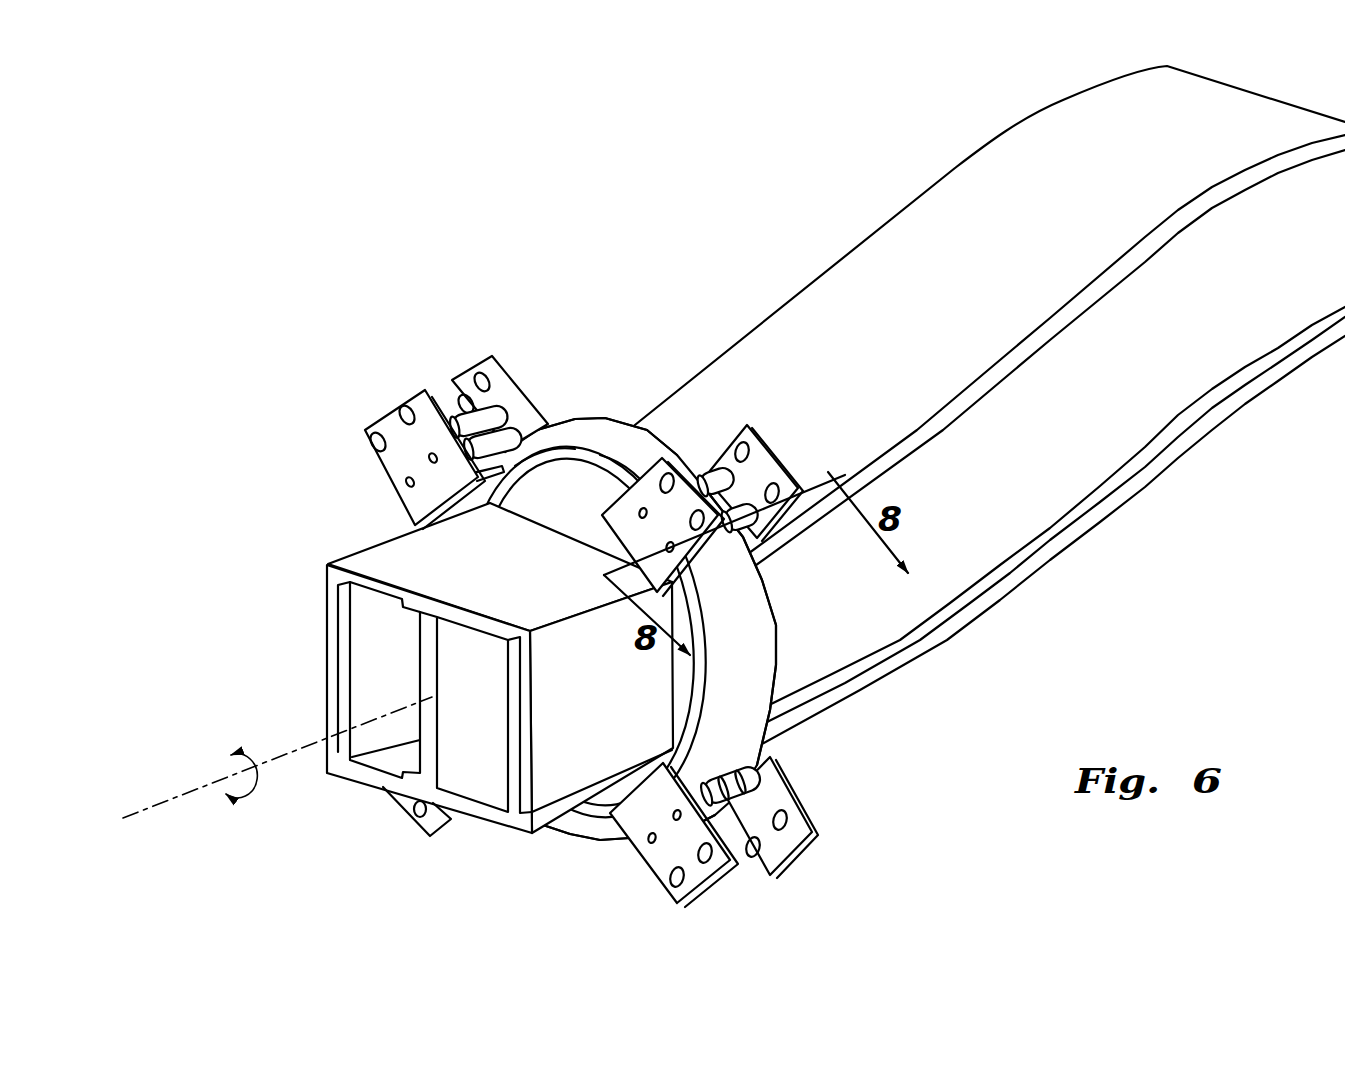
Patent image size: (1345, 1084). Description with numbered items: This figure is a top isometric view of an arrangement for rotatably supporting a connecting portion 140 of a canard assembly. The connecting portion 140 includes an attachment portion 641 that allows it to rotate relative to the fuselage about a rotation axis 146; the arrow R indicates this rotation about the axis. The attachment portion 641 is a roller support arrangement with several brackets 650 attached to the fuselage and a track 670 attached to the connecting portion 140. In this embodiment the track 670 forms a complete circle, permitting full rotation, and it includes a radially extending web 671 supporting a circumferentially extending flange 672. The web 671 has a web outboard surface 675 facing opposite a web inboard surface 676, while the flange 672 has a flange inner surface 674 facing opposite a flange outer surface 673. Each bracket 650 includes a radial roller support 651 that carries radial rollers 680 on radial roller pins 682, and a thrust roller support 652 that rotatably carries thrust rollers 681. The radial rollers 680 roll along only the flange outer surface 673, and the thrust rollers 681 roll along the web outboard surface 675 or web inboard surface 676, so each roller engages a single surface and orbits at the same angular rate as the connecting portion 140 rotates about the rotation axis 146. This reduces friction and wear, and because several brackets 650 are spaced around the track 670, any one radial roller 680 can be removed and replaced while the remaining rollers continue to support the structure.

The connecting portion 140 is at (853, 288).
The rotation axis 146 is at (148, 800).
The direction of rotation R is at (258, 786).
The attachment portion 641 is at (546, 383).
The bracket 650 is at (589, 630).
The radial roller support 651 is at (373, 464).
The thrust roller support 652 is at (488, 506).
The track 670 is at (721, 600).
The web 671 is at (565, 488).
The flange 672 is at (754, 722).
The flange outer surface 673 is at (607, 424).
The flange inner surface 674 is at (577, 836).
The web outboard surface 675 is at (573, 518).
The web inboard surface 676 is at (638, 447).
The radial roller 680 is at (463, 380).
The thrust roller 681 is at (518, 474).
The radial roller pin 682 is at (428, 460).